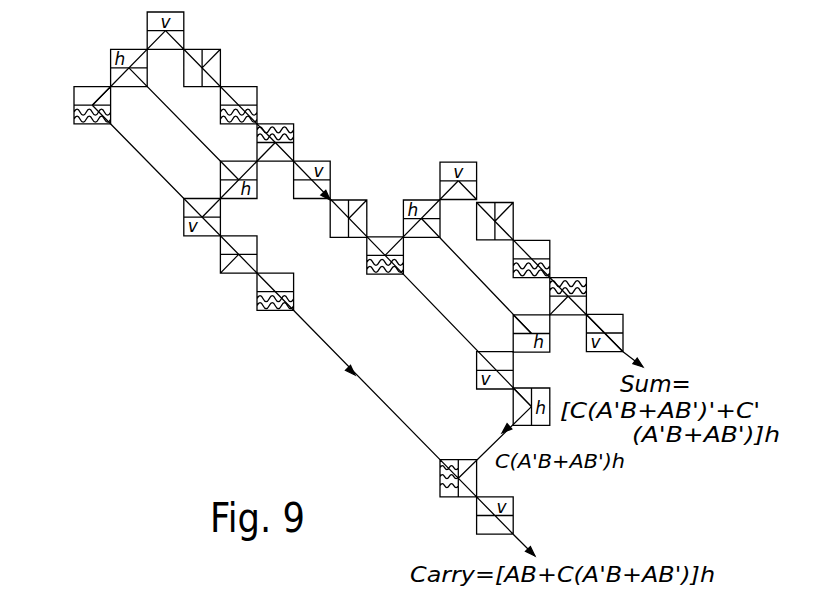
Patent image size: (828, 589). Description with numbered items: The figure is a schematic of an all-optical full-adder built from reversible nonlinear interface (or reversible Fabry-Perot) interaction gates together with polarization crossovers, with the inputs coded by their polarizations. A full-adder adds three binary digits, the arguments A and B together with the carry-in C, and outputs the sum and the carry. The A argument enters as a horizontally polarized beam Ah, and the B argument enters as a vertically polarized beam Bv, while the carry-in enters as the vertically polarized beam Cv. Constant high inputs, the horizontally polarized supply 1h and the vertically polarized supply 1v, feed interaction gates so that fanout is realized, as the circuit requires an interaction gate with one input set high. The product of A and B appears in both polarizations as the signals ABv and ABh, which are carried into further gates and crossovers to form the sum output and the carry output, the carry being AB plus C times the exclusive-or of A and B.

The horizontal logic-1 supply input 1h is at (220, 49).
The vertical logic-1 supply input 1v is at (220, 273).
The carry-in C vertical input Cv is at (367, 200).
The A horizontal input Ah is at (74, 73).
The B vertical input Bv is at (74, 87).
The AB product vertical signal ABv is at (453, 456).
The AB product horizontal signal ABh is at (459, 448).